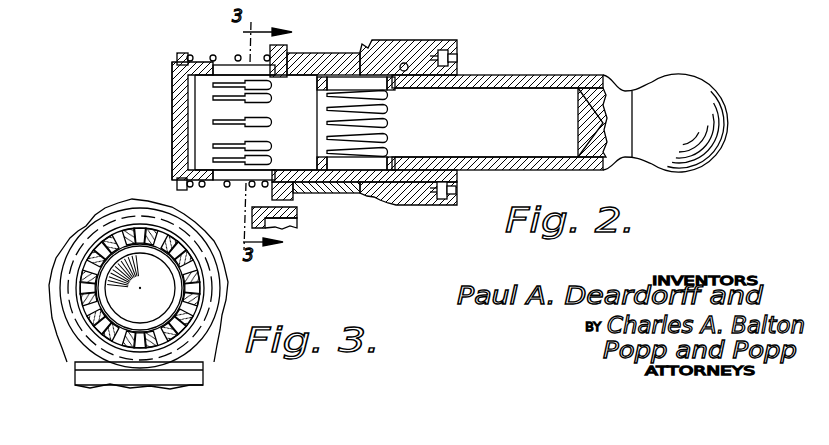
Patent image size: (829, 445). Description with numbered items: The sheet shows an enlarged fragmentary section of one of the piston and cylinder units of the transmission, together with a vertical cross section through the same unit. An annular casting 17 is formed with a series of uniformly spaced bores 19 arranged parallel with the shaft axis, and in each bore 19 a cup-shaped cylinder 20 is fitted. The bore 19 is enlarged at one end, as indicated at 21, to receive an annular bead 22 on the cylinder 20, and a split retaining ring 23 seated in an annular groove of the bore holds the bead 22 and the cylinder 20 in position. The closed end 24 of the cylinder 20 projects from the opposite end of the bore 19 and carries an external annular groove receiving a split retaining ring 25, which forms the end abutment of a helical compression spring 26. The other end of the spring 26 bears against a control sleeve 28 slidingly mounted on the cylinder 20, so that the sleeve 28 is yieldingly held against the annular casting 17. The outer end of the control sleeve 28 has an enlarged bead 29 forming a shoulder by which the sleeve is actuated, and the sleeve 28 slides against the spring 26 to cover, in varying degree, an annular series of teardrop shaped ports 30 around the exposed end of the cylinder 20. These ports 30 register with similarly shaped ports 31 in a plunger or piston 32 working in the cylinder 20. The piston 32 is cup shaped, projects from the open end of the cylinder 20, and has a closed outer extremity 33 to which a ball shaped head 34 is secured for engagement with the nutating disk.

In FIG. 2, the annular casting 17 is at (374, 205).
In FIG. 3, the annular casting 17 is at (65, 247).
In FIG. 2, the bores 19 is at (405, 62).
In FIG. 2, the cylinder 20 is at (158, 83).
In FIG. 3, the cylinder 20 is at (236, 281).
In FIG. 2, the enlarged end of bore 21 is at (459, 58).
In FIG. 2, the annular bead 22 is at (428, 204).
In FIG. 2, the split retaining ring 23 is at (456, 193).
In FIG. 2, the closed end of cylinder 24 is at (172, 133).
In FIG. 2, the split retaining ring 25 is at (182, 52).
In FIG. 2, the helical compression spring 26 is at (233, 187).
In FIG. 3, the helical compression spring 26 is at (82, 306).
In FIG. 2, the control sleeve 28 is at (338, 56).
In FIG. 3, the control sleeve 28 is at (95, 246).
In FIG. 2, the enlarged bead 29 is at (290, 60).
In FIG. 3, the enlarged bead 29 is at (86, 226).
In FIG. 2, the teardrop shaped ports 30 is at (237, 78).
In FIG. 3, the teardrop shaped ports 30 is at (213, 312).
In FIG. 2, the ports 31 is at (389, 111).
In FIG. 2, the plunger or piston 32 is at (556, 78).
In FIG. 3, the plunger or piston 32 is at (149, 257).
In FIG. 2, the closed outer extremity 33 is at (617, 92).
In FIG. 3, the closed outer extremity 33 is at (140, 288).
In FIG. 2, the ball shaped head 34 is at (724, 128).